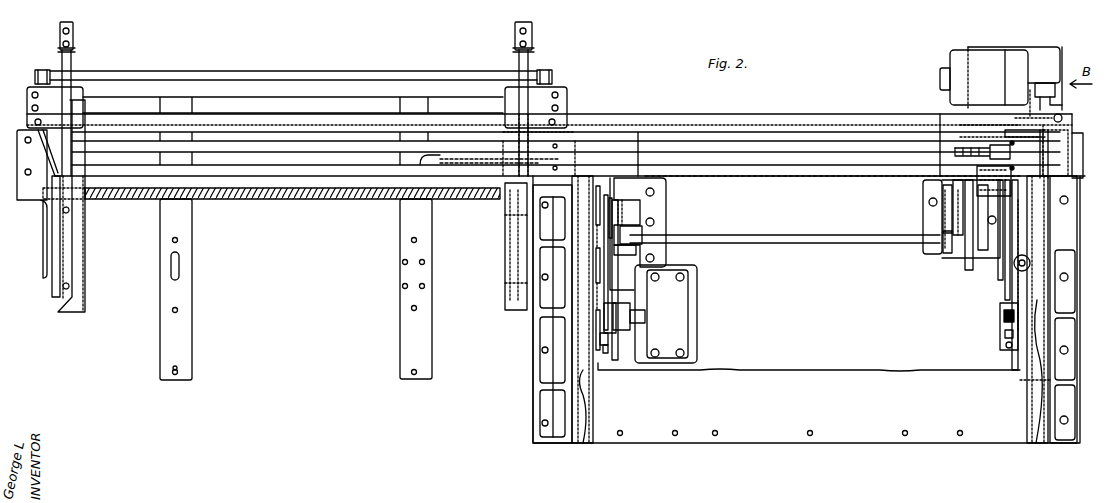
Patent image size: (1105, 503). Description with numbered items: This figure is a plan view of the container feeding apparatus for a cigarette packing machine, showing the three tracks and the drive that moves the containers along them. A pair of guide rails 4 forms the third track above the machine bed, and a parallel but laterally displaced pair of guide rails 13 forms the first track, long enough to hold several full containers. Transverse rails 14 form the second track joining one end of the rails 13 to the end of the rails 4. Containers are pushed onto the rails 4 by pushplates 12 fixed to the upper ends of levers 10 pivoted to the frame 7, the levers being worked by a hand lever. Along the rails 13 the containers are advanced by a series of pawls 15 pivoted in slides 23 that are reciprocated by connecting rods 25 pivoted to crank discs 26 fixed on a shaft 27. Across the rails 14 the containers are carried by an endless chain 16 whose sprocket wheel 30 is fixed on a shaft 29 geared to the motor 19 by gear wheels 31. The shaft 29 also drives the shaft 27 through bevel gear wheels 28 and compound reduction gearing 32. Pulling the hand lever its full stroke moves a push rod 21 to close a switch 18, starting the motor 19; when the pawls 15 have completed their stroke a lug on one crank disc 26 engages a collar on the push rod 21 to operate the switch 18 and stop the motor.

The guide rails 4 is at (84, 262).
The frame 7 is at (46, 258).
The levers 10 is at (73, 50).
The pushplates 12 is at (72, 66).
The guide rails 13 is at (594, 400).
The transverse rails 14 is at (806, 146).
The pawls 15 is at (596, 306).
The endless chain 16 is at (991, 179).
The switch 18 is at (680, 300).
The motor 19 is at (958, 52).
The push rod 21 is at (646, 195).
The slides 23 is at (596, 364).
The connecting rods 25 is at (606, 216).
The crank discs 26 is at (618, 290).
The shaft 27 is at (865, 243).
The bevel gear wheels 28 is at (995, 190).
The shaft 29 is at (1055, 132).
The sprocket wheel 30 is at (1066, 150).
The gear wheels 31 is at (1034, 106).
The compound reduction gearing 32 is at (952, 210).